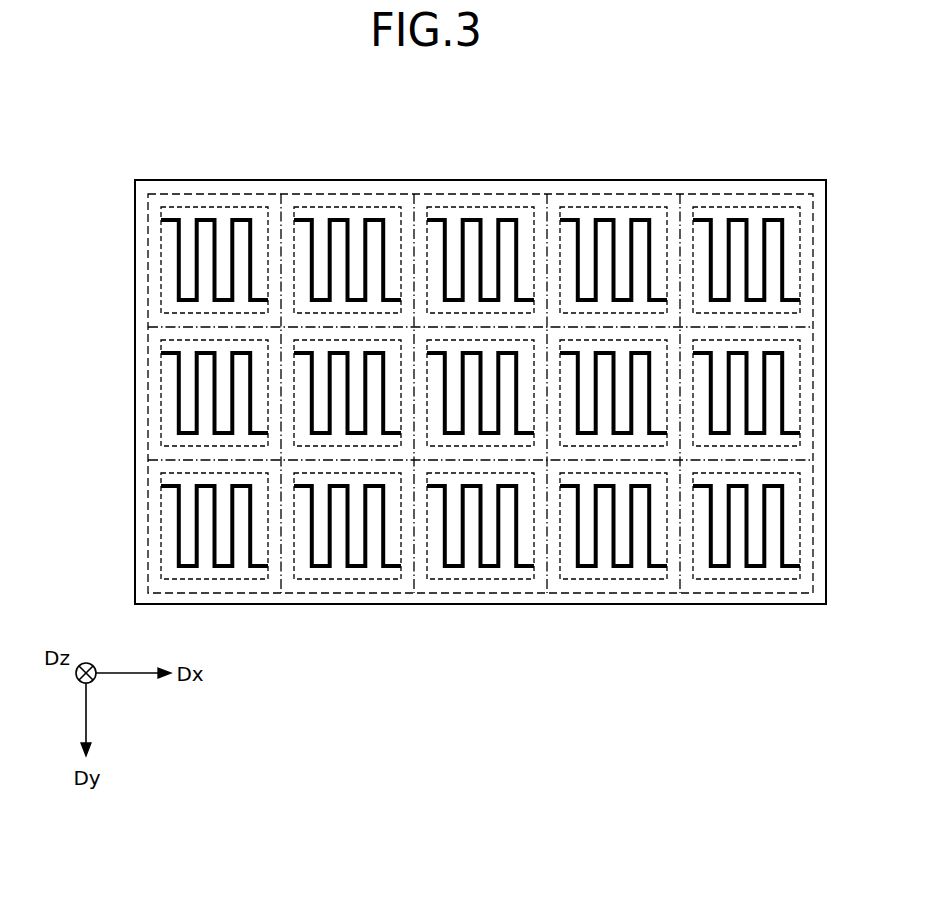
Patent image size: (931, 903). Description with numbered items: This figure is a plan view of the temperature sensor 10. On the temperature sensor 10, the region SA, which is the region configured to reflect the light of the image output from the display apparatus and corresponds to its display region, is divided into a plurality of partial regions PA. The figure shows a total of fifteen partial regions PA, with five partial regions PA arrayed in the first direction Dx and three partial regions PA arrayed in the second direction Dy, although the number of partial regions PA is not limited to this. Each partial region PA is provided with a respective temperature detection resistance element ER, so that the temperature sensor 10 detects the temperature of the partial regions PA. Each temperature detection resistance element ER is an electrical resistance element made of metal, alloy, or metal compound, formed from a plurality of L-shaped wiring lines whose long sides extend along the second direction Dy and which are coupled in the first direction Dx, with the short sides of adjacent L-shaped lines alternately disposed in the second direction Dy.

The temperature sensor 10 is at (745, 180).
The region SA is at (610, 194).
The partial region PA is at (345, 194).
The temperature detection resistance element ER is at (214, 207).